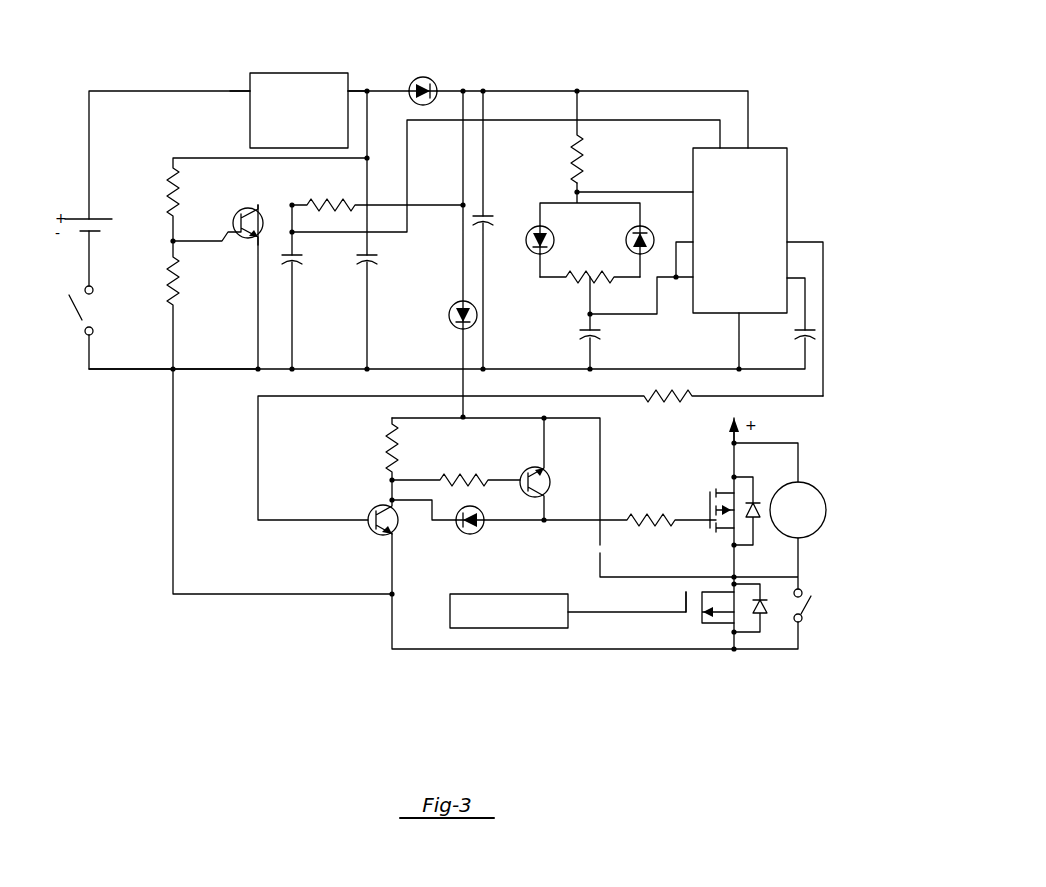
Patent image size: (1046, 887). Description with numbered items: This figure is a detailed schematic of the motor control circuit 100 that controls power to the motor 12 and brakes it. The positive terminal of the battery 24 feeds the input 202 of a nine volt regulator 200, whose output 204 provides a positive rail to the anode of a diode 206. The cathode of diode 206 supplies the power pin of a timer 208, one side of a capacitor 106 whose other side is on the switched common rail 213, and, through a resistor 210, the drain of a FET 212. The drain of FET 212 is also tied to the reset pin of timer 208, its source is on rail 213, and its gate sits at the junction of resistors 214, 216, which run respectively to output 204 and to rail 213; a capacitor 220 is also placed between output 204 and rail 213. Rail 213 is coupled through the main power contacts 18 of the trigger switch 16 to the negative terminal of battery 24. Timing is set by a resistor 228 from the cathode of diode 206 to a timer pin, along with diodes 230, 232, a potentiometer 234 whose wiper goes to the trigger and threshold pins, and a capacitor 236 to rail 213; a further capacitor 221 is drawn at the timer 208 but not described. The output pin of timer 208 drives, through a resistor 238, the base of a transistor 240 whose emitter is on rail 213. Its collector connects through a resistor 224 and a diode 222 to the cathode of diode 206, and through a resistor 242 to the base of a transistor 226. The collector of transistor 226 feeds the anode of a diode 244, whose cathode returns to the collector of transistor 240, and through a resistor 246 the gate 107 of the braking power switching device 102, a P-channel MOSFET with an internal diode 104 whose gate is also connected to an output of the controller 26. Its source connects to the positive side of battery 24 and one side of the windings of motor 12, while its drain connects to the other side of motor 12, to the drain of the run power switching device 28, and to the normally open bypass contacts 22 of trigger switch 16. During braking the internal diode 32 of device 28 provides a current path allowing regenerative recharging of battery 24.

The motor control circuit 100 is at (705, 52).
The motor 12 is at (811, 489).
The trigger switch 16 is at (106, 309).
The main power contacts 18 is at (80, 322).
The bypass contacts 22 is at (813, 600).
The battery 24 is at (122, 222).
The controller 26 is at (478, 594).
The run power switching device 28 is at (702, 623).
The internal diode 32 is at (767, 613).
The braking power switching device 102 is at (698, 498).
The internal diode 104 is at (760, 498).
The capacitor 106 is at (492, 212).
The gate 107 is at (707, 531).
The nine volt regulator 200 is at (300, 73).
The input 202 is at (250, 86).
The output 204 is at (355, 90).
The diode 206 is at (432, 80).
The timer 208 is at (790, 172).
The resistor 210 is at (322, 203).
The FET 212 is at (238, 207).
The switched common rail 213 is at (208, 368).
The resistor 214 is at (170, 182).
The resistor 216 is at (168, 290).
The capacitor 220 is at (376, 263).
The capacitor 221 is at (810, 336).
The diode 222 is at (449, 315).
The resistor 224 is at (385, 452).
The transistor 226 is at (552, 480).
The resistor 228 is at (585, 162).
The diode 230 is at (526, 243).
The diode 232 is at (655, 237).
The potentiometer 234 is at (583, 270).
The capacitor 236 is at (600, 335).
The resistor 238 is at (668, 405).
The transistor 240 is at (375, 537).
The resistor 242 is at (462, 476).
The diode 244 is at (480, 535).
The resistor 246 is at (648, 516).